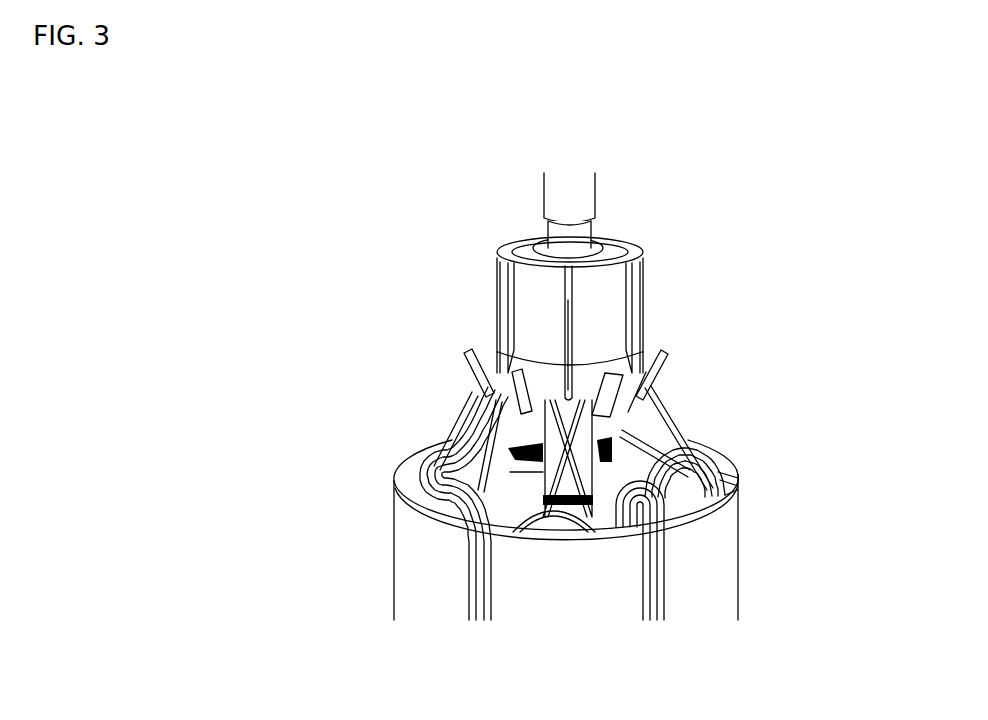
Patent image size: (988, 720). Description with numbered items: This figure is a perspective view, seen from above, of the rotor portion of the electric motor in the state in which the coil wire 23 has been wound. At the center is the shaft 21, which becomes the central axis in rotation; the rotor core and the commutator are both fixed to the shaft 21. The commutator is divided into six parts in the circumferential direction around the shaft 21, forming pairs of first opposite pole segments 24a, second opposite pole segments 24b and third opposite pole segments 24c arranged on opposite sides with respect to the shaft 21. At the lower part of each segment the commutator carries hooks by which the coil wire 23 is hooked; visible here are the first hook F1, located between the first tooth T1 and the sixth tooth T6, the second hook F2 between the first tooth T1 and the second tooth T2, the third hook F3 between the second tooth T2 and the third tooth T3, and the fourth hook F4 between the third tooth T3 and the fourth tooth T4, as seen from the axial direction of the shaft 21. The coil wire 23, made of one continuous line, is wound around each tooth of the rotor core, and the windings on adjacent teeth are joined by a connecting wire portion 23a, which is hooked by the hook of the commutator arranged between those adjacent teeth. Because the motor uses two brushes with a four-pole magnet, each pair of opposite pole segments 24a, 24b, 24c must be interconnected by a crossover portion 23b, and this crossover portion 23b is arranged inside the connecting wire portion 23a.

The shaft 21 is at (572, 200).
The first opposite pole segments 24a is at (770, 285).
The second opposite pole segments 24b is at (527, 333).
The third opposite pole segments 24c is at (598, 338).
The first hook F1 is at (468, 363).
The second hook F2 is at (510, 388).
The third hook F3 is at (668, 378).
The fourth hook F4 is at (665, 355).
The coil wire 23 is at (735, 480).
The connecting wire portion 23a is at (680, 440).
The crossover portion 23b is at (555, 428).
The first tooth T1 is at (437, 576).
The second tooth T2 is at (597, 557).
The third tooth T3 is at (715, 593).
The fourth tooth T4 is at (703, 467).
The sixth tooth T6 is at (407, 473).